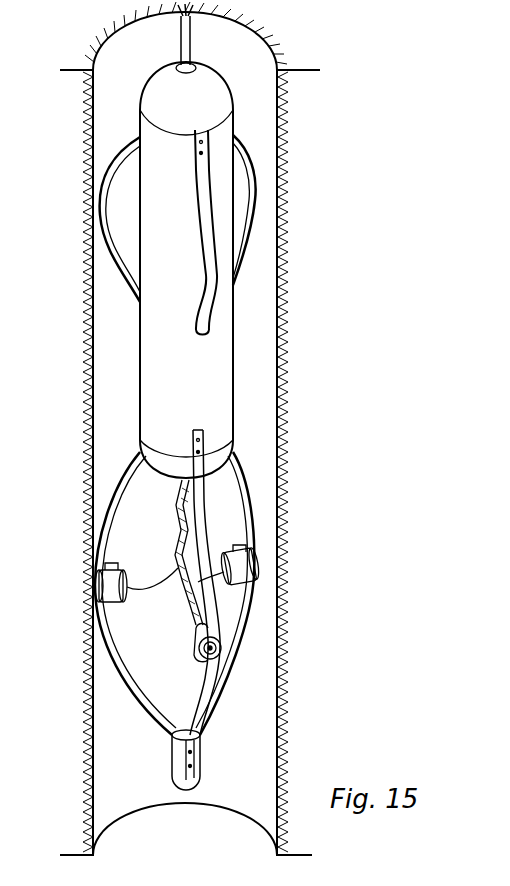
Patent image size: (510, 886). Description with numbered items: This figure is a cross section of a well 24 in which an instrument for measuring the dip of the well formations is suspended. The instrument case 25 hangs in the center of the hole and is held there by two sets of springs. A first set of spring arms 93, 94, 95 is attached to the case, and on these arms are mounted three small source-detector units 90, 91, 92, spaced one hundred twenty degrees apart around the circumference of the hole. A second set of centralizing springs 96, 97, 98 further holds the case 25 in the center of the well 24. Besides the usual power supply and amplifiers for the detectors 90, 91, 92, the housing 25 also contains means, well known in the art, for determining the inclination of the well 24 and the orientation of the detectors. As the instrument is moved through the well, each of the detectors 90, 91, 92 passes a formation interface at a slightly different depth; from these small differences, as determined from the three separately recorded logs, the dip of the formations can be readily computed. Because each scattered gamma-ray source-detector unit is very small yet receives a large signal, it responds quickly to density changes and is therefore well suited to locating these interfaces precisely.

The well 24 is at (95, 378).
The instrument case 25 is at (233, 383).
The source-detector unit 90 is at (198, 648).
The source-detector unit 91 is at (258, 565).
The source-detector unit 92 is at (95, 582).
The spring arm 93 is at (200, 724).
The spring arm 94 is at (240, 482).
The spring arm 95 is at (112, 510).
The centralizing spring 96 is at (112, 162).
The centralizing spring 97 is at (250, 158).
The centralizing spring 98 is at (200, 262).